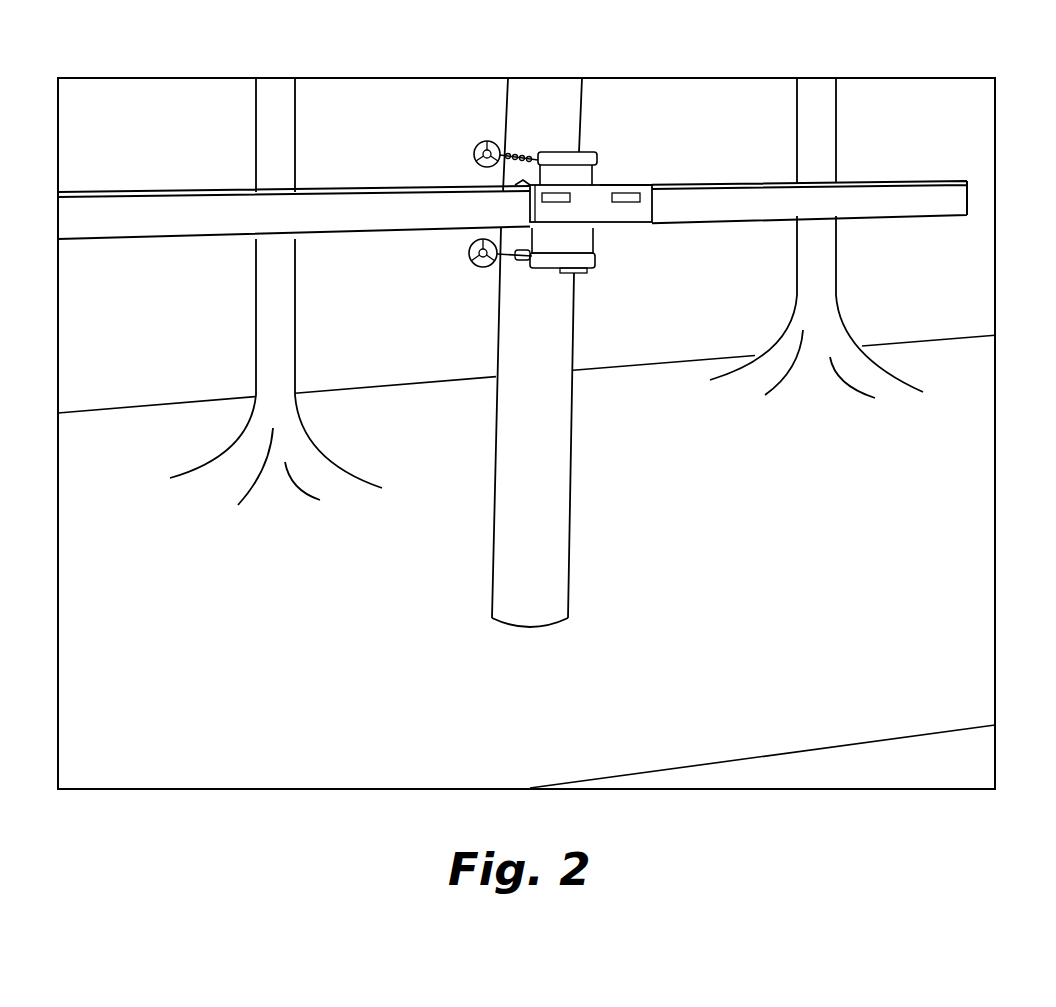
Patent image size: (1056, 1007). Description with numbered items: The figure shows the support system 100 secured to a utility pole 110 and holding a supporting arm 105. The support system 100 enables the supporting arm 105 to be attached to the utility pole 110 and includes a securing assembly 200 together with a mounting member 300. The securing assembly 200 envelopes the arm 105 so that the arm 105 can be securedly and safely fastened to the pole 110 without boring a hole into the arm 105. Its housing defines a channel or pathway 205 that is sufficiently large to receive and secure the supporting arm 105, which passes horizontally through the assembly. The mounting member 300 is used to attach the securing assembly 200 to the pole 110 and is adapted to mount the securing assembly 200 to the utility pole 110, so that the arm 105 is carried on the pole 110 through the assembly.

The support system 100 is at (617, 150).
The supporting arm 105 is at (872, 198).
The utility pole 110 is at (543, 463).
The securing assembly 200 is at (598, 208).
The channel or pathway 205 is at (645, 183).
The mounting member 300 is at (555, 158).